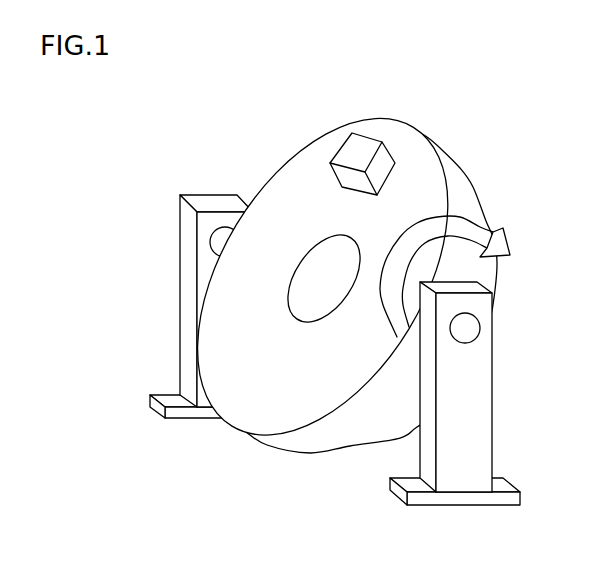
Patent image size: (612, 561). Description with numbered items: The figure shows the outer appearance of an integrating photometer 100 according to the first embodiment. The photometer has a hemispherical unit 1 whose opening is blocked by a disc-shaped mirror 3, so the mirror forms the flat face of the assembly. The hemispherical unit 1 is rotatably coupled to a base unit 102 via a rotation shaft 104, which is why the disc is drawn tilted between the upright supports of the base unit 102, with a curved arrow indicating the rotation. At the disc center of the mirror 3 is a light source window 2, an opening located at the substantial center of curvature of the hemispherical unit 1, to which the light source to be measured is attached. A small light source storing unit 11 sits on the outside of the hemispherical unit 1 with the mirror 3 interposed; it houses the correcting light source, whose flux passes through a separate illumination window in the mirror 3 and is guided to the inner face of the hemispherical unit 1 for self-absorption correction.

The integrating photometer 100 is at (351, 288).
The hemispherical unit 1 is at (336, 298).
The light source window 2 is at (305, 295).
The mirror 3 is at (240, 413).
The light source storing unit 11 is at (363, 148).
The base unit 102 is at (473, 393).
The rotation shaft 104 is at (470, 328).